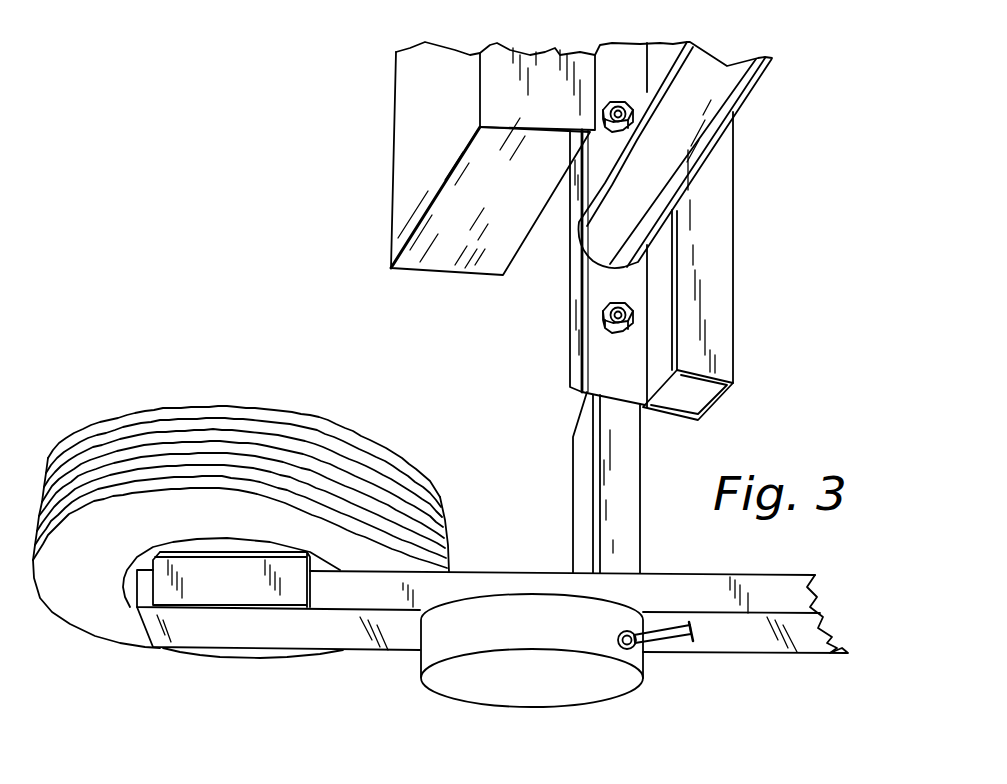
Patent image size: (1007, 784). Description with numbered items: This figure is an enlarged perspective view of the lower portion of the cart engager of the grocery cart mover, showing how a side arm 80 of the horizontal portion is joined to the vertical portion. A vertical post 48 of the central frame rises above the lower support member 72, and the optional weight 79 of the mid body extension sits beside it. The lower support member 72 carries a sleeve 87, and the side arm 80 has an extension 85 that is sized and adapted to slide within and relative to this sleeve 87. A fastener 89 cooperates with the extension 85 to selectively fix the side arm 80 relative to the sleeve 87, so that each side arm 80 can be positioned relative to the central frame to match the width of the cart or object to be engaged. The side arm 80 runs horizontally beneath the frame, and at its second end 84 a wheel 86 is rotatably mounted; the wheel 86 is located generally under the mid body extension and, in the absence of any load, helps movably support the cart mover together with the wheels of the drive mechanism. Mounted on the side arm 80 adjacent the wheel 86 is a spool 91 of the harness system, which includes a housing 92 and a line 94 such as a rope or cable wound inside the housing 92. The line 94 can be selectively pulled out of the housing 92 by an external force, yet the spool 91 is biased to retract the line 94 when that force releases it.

The vertical post 48 is at (750, 97).
The lower support member 72 is at (725, 264).
The weight 79 is at (412, 164).
The side arm 80 is at (797, 630).
The second end 84 is at (177, 625).
The extension 85 is at (583, 487).
The wheel 86 is at (289, 430).
The sleeve 87 is at (570, 357).
The fastener 89 is at (603, 312).
The spool 91 is at (550, 712).
The spool housing 92 is at (543, 695).
The line 94 is at (667, 641).